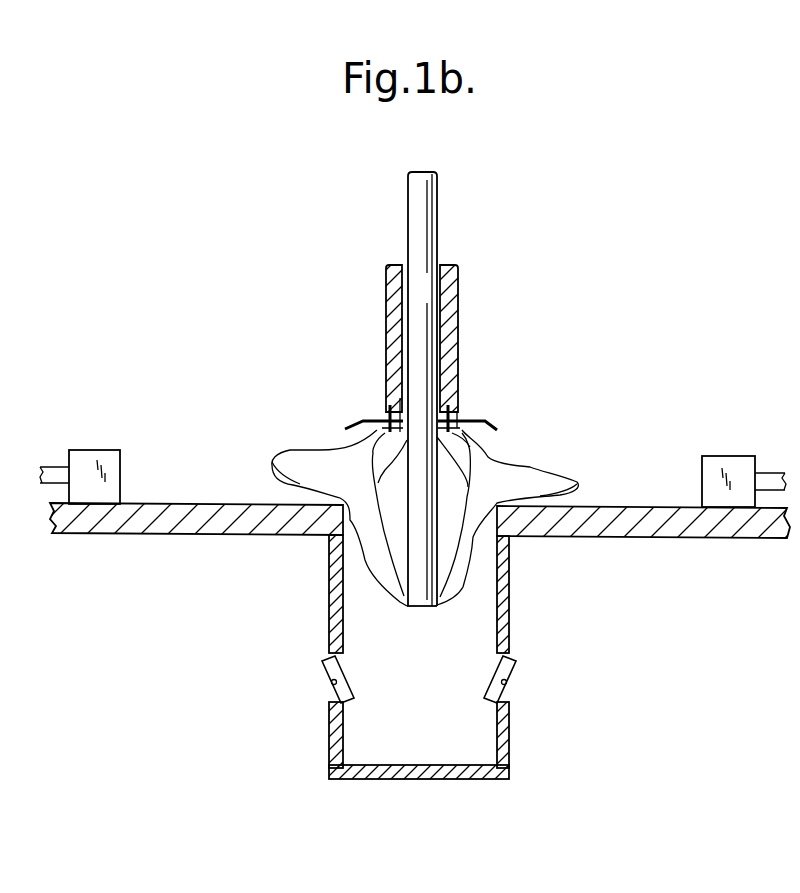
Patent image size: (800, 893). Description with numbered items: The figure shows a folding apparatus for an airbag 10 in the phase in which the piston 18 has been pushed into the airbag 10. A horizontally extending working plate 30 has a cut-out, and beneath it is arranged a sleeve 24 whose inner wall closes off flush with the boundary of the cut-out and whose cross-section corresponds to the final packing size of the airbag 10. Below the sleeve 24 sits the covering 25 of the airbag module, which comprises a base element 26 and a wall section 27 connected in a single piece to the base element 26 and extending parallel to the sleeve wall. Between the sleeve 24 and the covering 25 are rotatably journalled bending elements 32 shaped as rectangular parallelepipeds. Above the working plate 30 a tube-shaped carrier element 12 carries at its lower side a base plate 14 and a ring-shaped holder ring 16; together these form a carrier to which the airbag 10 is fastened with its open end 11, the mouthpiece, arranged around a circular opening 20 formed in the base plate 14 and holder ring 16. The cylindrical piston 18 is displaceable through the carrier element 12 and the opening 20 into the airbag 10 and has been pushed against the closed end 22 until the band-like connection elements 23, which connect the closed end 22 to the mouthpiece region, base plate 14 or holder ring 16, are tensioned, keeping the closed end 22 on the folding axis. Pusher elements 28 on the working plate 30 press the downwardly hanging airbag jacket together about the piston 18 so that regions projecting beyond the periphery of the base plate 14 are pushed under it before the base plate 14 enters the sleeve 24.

The airbag 10 is at (541, 472).
The open end 11 is at (385, 426).
The carrier element 12 is at (448, 290).
The base plate 14 is at (488, 421).
The holder ring 16 is at (497, 438).
The piston 18 is at (423, 192).
The opening 20 is at (403, 463).
The closed end 22 is at (419, 607).
The connection elements 23 is at (378, 470).
The sleeve 24 is at (501, 580).
The covering 25 is at (344, 753).
The base element 26 is at (367, 778).
The wall section 27 is at (333, 732).
The pusher elements 28 is at (88, 465).
The working plate 30 is at (145, 518).
The bending elements 32 is at (322, 664).